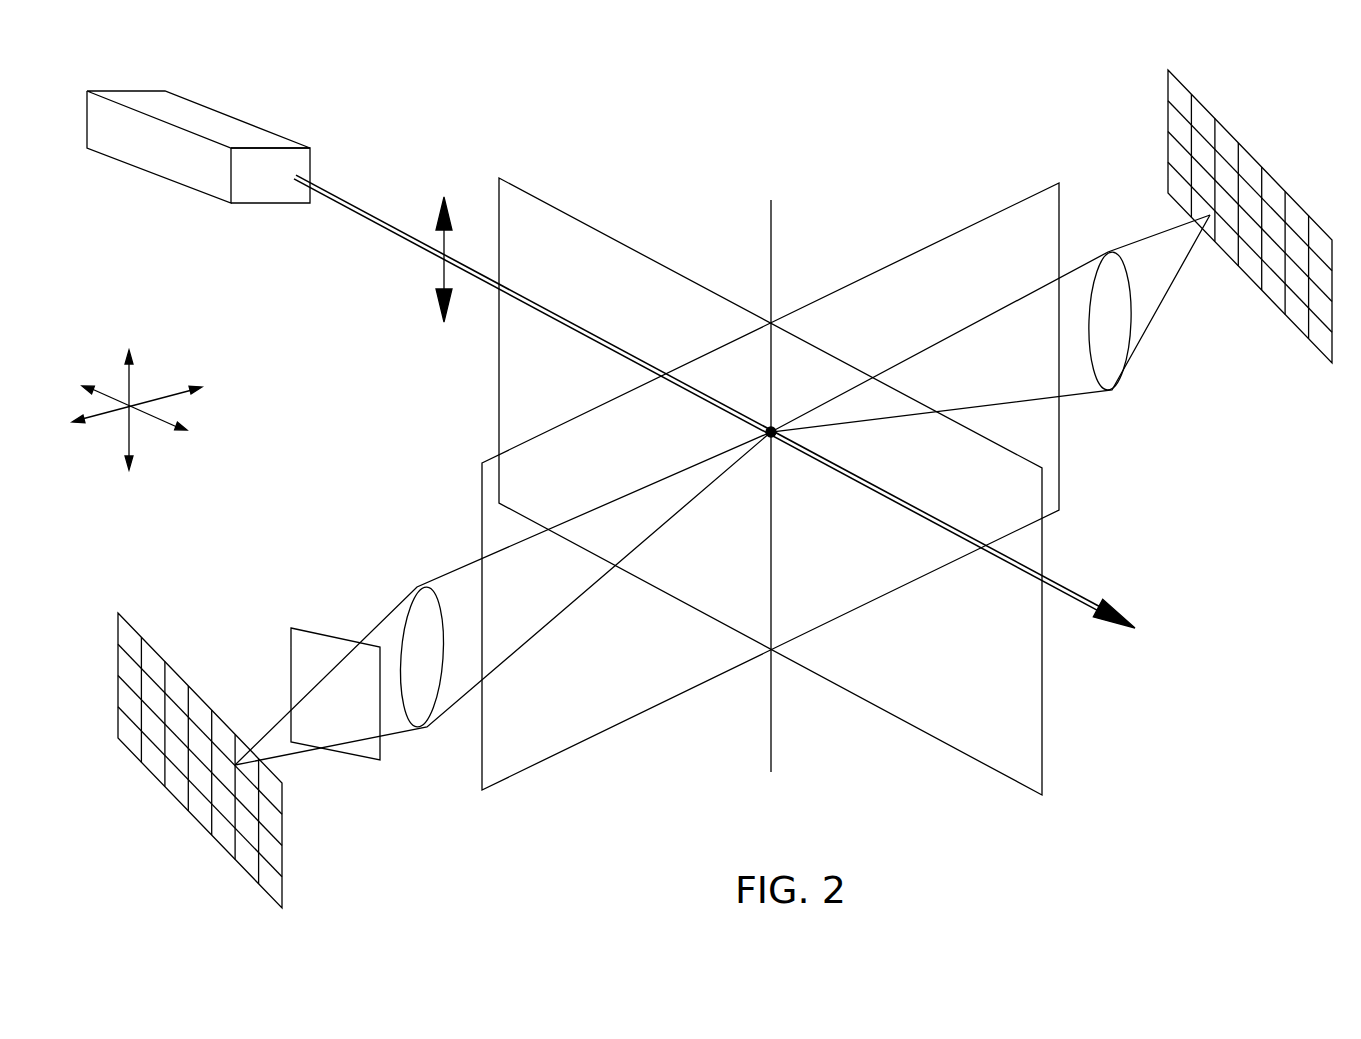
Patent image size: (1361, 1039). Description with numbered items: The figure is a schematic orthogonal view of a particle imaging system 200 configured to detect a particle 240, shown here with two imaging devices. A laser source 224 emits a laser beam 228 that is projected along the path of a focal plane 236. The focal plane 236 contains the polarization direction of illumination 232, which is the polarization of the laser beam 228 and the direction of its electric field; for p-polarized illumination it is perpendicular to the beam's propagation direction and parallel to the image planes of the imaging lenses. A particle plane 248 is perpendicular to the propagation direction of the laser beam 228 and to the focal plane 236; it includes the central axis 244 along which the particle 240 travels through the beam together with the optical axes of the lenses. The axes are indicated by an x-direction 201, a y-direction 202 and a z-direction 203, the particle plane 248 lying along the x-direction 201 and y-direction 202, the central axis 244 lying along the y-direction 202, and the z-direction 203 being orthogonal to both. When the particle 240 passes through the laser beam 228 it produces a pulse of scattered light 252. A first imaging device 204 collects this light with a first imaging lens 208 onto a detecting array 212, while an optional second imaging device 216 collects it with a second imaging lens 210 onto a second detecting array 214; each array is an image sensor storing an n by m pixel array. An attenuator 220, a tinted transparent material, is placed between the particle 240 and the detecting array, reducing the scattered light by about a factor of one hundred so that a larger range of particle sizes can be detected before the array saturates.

The particle imaging system 200 is at (158, 48).
The first imaging device 204 is at (1110, 78).
The second imaging device 216 is at (180, 592).
The laser source 224 is at (138, 158).
The laser beam 228 is at (372, 225).
The polarization direction of illumination 232 is at (445, 197).
The focal plane 236 is at (562, 210).
The particle plane 248 is at (597, 735).
The central axis 244 is at (773, 250).
The particle 240 is at (765, 432).
The first imaging lens 208 is at (1108, 262).
The second imaging lens 210 is at (418, 590).
The detecting array 212 is at (1250, 157).
The second detecting array 214 is at (175, 794).
The attenuator 220 is at (310, 638).
The scattered light 252 is at (1080, 378).
The x-direction 201 is at (164, 394).
The y-direction 202 is at (127, 392).
The z-direction 203 is at (157, 415).